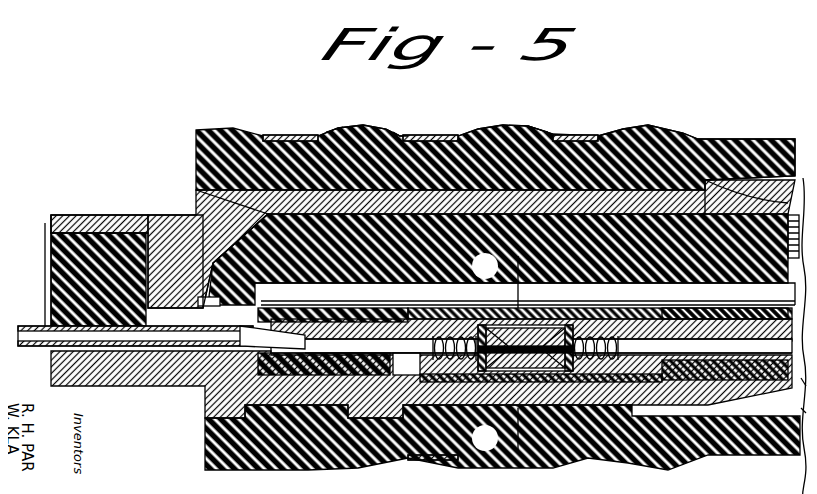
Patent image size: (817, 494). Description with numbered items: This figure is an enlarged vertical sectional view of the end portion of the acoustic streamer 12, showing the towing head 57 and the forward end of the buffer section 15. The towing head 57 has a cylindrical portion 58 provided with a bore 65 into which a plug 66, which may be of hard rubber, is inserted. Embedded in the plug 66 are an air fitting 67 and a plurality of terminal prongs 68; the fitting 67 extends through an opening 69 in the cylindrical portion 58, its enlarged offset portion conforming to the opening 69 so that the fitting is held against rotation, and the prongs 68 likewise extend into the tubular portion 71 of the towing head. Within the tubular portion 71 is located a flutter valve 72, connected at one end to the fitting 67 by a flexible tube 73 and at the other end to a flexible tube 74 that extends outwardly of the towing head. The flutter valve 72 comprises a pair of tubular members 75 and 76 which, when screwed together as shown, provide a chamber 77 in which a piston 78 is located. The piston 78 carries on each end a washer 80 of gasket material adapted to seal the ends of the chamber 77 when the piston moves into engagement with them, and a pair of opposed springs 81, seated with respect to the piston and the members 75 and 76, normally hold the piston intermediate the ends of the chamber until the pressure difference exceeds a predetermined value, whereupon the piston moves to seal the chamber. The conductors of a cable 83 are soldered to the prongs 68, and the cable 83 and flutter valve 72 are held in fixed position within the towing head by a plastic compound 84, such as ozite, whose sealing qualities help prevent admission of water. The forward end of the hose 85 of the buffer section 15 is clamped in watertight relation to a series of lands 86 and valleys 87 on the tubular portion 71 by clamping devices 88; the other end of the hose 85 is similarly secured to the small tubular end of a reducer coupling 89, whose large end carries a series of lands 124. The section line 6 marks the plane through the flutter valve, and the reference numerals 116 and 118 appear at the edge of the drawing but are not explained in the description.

The section line 6- 6 is at (507, 258).
The acoustic streamer 12 is at (218, 120).
The buffer section 15 is at (641, 118).
The towing head 57 is at (196, 411).
The cylindrical portion 58 is at (112, 221).
The bore 65 is at (70, 212).
The plug 66 is at (46, 247).
The air fitting 67 is at (30, 318).
The terminal prongs 68 is at (200, 298).
The opening 69 is at (150, 298).
The tubular portion 71 is at (390, 128).
The flutter valve 72 is at (678, 350).
The flexible tube 73 is at (195, 390).
The flexible tube 74 is at (786, 284).
The tubular member 75 is at (398, 448).
The tubular member 76 is at (650, 330).
The chamber 77 is at (584, 312).
The piston 78 is at (519, 320).
The washer 80 is at (474, 314).
The springs 81 is at (608, 328).
The cable 83 is at (525, 292).
The plastic compound 84 is at (693, 133).
The hose 85 is at (740, 131).
The lands 86 is at (187, 166).
The valleys 87 is at (326, 124).
The clamping devices 88 is at (286, 126).
The reducer coupling 89 is at (796, 442).
The line 116 is at (800, 415).
The line 118 is at (800, 391).
The lands 124 is at (798, 138).